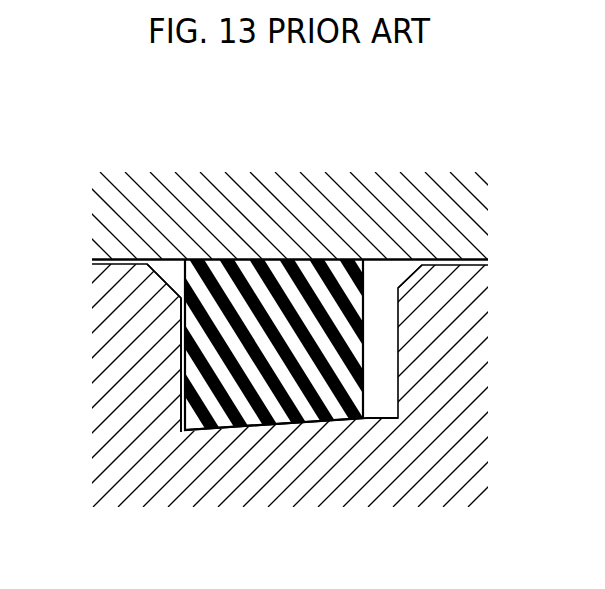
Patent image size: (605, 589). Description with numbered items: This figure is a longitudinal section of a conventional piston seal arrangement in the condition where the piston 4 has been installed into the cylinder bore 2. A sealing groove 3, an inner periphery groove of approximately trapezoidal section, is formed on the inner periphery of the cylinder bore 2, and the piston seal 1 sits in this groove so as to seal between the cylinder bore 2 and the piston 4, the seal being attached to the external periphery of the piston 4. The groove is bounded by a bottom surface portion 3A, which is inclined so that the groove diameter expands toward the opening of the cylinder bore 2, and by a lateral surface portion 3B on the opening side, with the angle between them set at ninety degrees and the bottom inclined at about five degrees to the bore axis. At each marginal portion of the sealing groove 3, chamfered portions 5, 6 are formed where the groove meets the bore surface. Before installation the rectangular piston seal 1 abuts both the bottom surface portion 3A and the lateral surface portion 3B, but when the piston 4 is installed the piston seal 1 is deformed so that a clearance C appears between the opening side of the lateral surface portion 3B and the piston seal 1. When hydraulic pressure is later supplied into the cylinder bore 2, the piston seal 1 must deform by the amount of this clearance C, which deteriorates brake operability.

The piston seal 1 is at (293, 288).
The cylinder bore 2 is at (450, 262).
The sealing groove 3 is at (383, 390).
The bottom surface portion 3A is at (253, 425).
The lateral surface portion 3B is at (188, 318).
The piston 4 is at (285, 192).
The chamfered portion 5 is at (172, 272).
The chamfered portion 6 is at (403, 270).
The clearance C is at (181, 348).